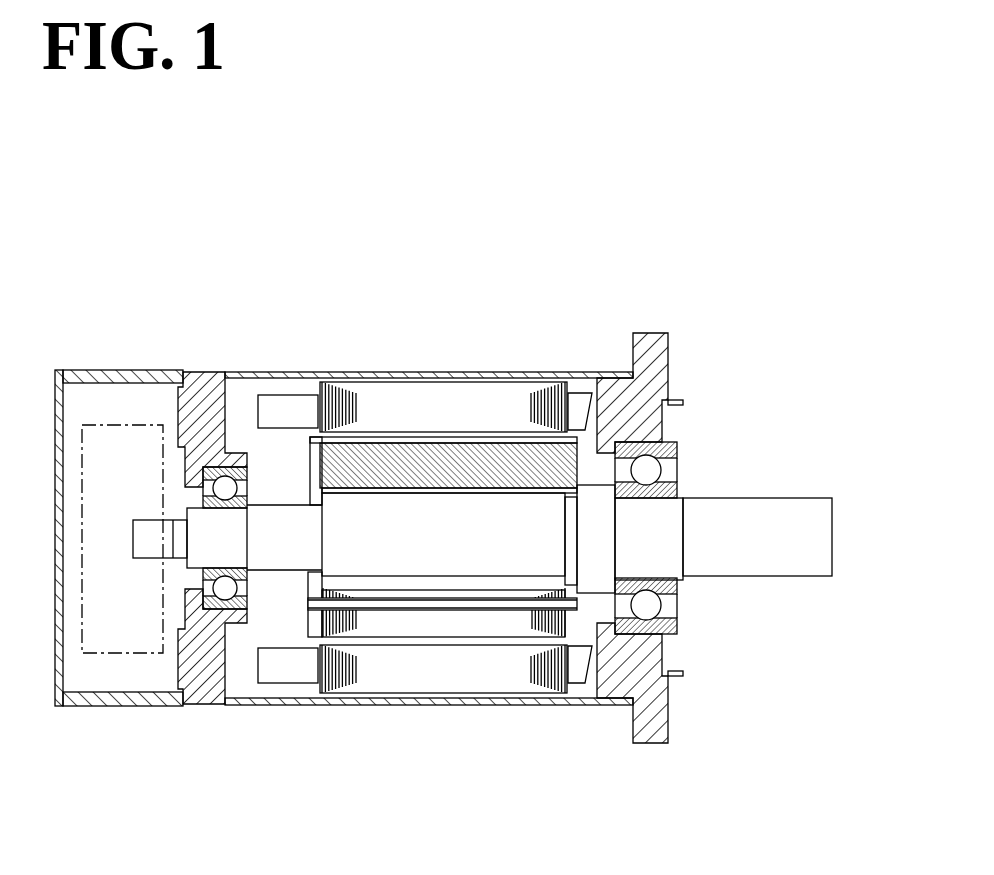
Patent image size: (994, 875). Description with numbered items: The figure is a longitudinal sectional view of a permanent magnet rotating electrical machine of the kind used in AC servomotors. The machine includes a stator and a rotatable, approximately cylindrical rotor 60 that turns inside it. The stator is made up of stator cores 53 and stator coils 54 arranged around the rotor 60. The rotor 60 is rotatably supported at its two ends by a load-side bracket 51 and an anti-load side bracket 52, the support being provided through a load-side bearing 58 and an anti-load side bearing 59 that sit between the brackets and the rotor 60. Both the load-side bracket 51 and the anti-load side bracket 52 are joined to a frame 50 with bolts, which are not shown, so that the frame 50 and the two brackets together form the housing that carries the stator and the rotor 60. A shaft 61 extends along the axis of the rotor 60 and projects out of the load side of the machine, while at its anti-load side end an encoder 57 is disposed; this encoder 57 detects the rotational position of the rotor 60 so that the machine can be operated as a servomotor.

The frame 50 is at (445, 367).
The load-side bracket 51 is at (633, 388).
The anti-load side bracket 52 is at (213, 400).
The stator core 53 is at (400, 386).
The stator coil 54 is at (593, 410).
The encoder 57 is at (128, 427).
The load-side bearing 58 is at (677, 448).
The anti-load side bearing 59 is at (238, 455).
The rotor 60 is at (570, 628).
The shaft 61 is at (653, 555).